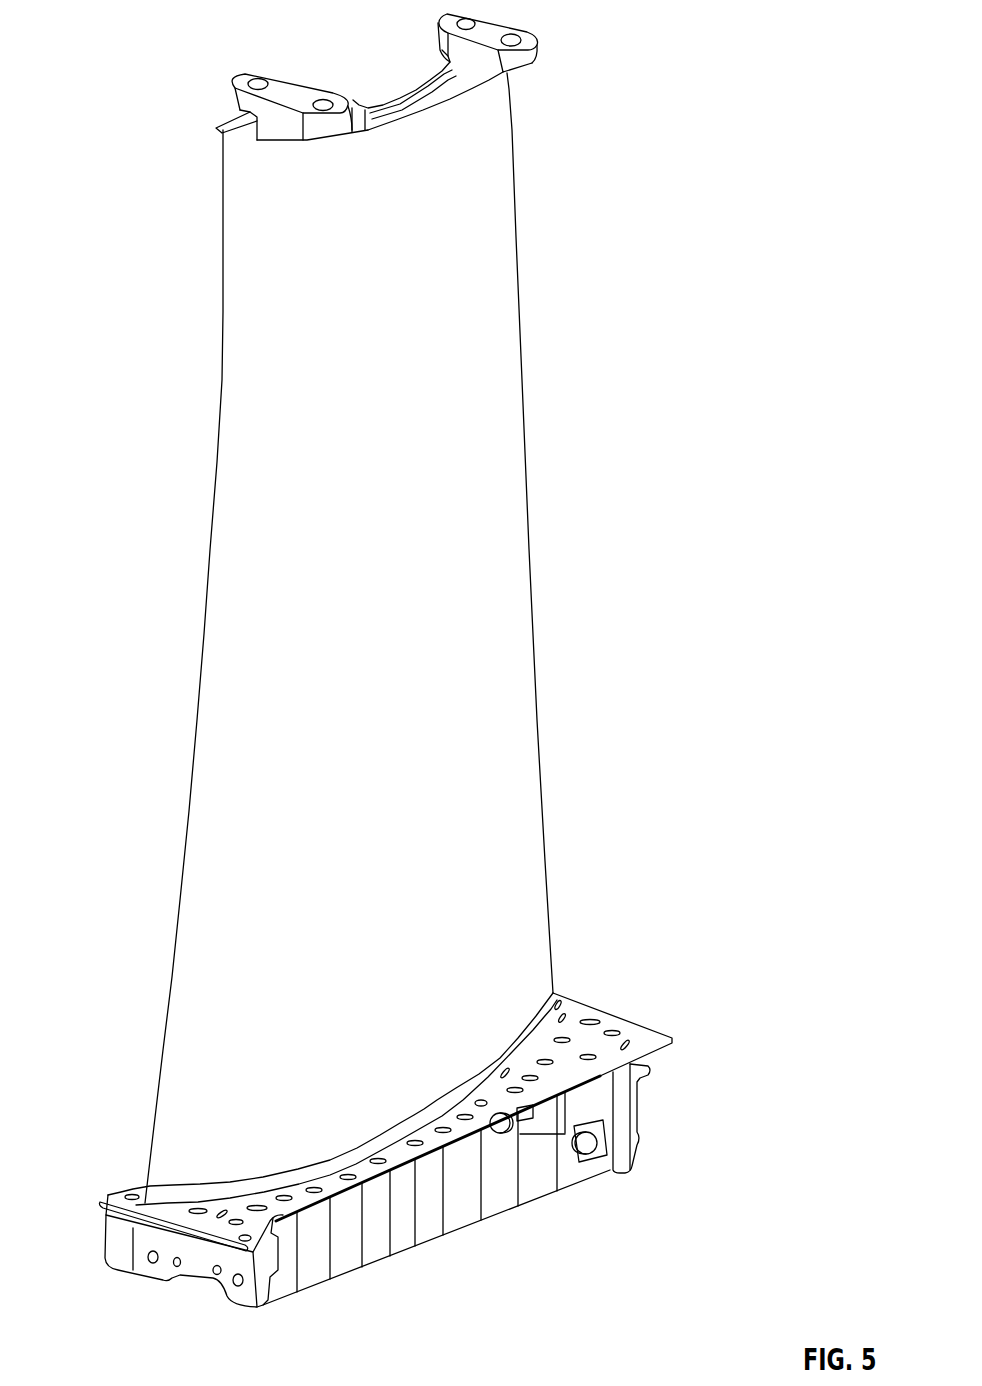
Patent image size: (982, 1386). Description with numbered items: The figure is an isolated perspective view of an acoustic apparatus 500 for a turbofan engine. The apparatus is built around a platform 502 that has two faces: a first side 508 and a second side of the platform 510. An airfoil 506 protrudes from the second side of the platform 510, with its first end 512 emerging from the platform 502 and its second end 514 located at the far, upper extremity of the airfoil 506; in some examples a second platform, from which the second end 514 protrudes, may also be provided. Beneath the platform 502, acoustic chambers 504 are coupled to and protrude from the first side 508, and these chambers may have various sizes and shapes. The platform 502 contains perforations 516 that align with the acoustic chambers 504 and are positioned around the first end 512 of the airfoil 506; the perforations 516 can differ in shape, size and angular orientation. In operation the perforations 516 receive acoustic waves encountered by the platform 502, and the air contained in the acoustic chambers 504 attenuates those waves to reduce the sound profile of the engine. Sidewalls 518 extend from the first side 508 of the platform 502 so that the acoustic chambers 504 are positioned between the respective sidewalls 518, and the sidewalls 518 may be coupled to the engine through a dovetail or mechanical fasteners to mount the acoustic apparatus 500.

The acoustic apparatus 500 is at (630, 36).
The platform 502 is at (668, 1038).
The acoustic chambers 504 is at (430, 1212).
The airfoil 506 is at (198, 680).
The first side 508 is at (578, 1170).
The second side of the platform 510 is at (104, 1200).
The first end 512 is at (555, 995).
The second end 514 is at (216, 130).
The perforations 516 is at (590, 1022).
The sidewalls 518 is at (650, 1127).